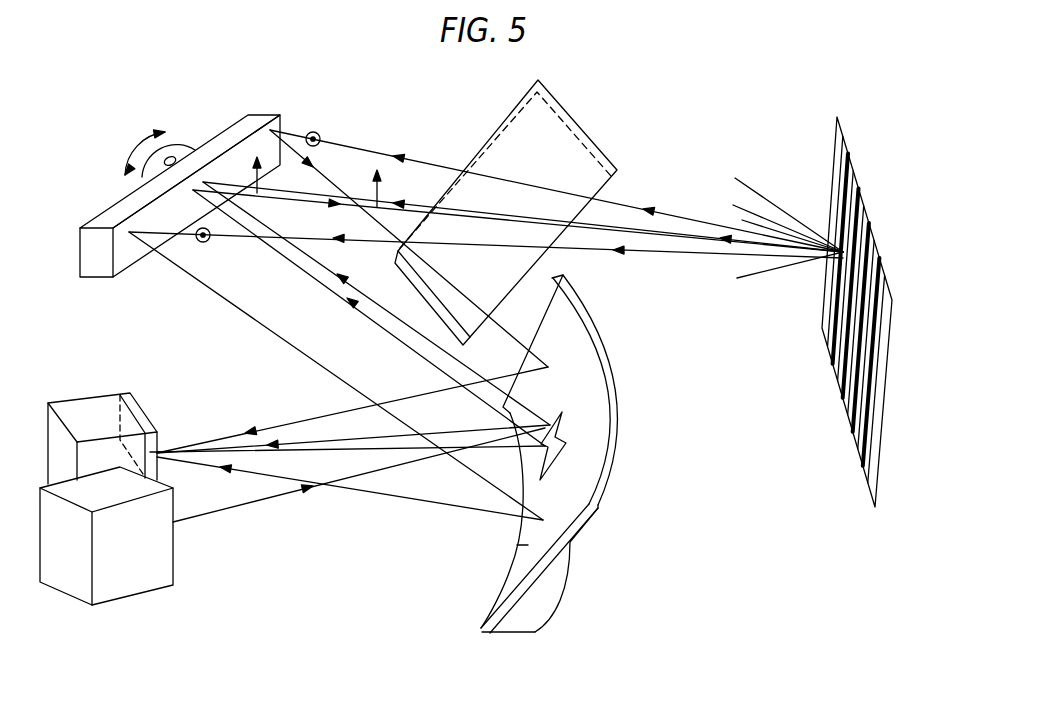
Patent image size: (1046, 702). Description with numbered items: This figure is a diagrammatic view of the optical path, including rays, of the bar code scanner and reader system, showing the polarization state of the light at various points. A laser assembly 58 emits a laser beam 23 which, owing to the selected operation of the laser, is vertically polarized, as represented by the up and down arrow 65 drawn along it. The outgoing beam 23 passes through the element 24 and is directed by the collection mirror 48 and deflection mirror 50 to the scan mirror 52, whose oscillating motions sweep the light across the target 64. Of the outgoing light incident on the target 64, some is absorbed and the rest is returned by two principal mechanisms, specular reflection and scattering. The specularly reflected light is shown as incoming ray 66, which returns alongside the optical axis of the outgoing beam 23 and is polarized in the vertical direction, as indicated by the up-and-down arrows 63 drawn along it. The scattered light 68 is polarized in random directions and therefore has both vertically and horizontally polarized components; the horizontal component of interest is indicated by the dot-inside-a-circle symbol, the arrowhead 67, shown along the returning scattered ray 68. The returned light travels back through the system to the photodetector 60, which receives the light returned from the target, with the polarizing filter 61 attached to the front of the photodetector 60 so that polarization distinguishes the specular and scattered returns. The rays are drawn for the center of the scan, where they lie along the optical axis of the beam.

The laser beam 23 is at (302, 194).
The lens plate 24 is at (583, 126).
The collection mirror 48 is at (512, 547).
The deflection mirror 50 is at (563, 457).
The scan mirror 52 is at (250, 120).
The laser assembly 58 is at (142, 550).
The photodetector 60 is at (82, 407).
The polarizing filter 61 is at (128, 405).
The up-and-down arrows 63 is at (382, 189).
The target 64 is at (843, 403).
The up and down arrow 65 is at (264, 170).
The specularly reflected light ray 66 is at (358, 200).
The arrowhead 67 is at (314, 131).
The scattered light 68 is at (348, 145).